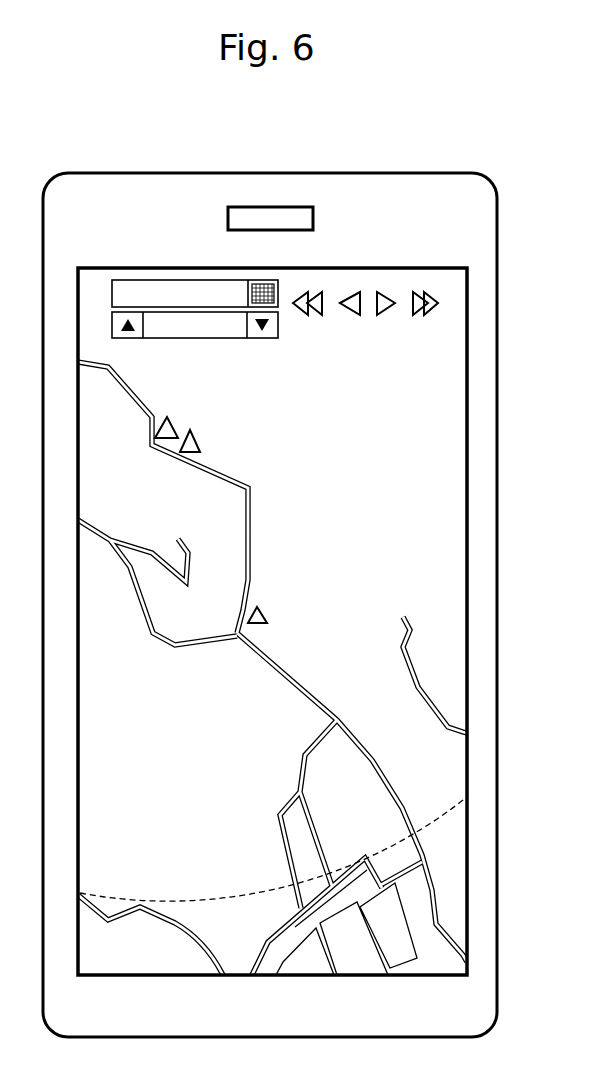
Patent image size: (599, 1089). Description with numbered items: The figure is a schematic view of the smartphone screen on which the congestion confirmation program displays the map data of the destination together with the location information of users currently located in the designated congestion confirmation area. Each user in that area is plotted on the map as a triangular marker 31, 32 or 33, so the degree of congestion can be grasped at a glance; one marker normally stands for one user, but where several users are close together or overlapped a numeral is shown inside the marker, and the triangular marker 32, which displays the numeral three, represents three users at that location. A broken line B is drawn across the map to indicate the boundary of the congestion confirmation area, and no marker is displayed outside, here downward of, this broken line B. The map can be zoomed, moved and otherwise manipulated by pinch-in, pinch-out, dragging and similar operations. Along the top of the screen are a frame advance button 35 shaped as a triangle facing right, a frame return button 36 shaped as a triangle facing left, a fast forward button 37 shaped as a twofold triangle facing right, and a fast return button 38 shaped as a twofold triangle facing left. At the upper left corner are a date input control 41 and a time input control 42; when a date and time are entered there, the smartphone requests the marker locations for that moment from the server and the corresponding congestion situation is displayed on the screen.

The triangular marker 31 is at (267, 620).
The triangular marker 32 is at (175, 428).
The triangular marker 33 is at (198, 440).
The frame advance button 35 is at (386, 291).
The frame return button 36 is at (352, 291).
The fast forward button 37 is at (425, 291).
The fast return button 38 is at (311, 291).
The date input control 41 is at (171, 280).
The time input control 42 is at (145, 338).
The broken line B is at (198, 902).